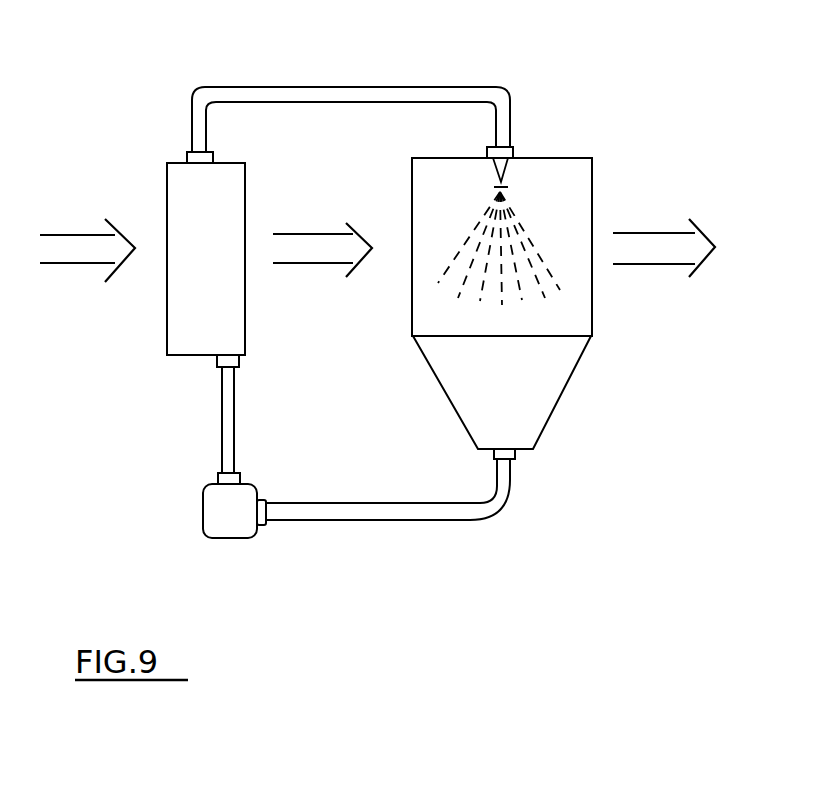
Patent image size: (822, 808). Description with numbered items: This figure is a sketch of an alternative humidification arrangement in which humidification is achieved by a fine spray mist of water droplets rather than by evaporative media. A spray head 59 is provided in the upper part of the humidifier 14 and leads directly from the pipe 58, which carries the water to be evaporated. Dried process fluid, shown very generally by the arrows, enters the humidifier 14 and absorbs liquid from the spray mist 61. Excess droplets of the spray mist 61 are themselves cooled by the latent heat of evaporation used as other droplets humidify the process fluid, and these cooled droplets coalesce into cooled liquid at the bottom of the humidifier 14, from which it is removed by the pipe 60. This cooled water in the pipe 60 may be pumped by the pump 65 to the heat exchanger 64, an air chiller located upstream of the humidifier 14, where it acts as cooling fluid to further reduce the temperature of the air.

The humidifier 14 is at (570, 306).
The pipe 58 is at (268, 88).
The spray head 59 is at (505, 178).
The pipe 60 is at (447, 510).
The spray mist 61 is at (540, 247).
The heat exchanger 64 is at (182, 202).
The pump 65 is at (227, 518).